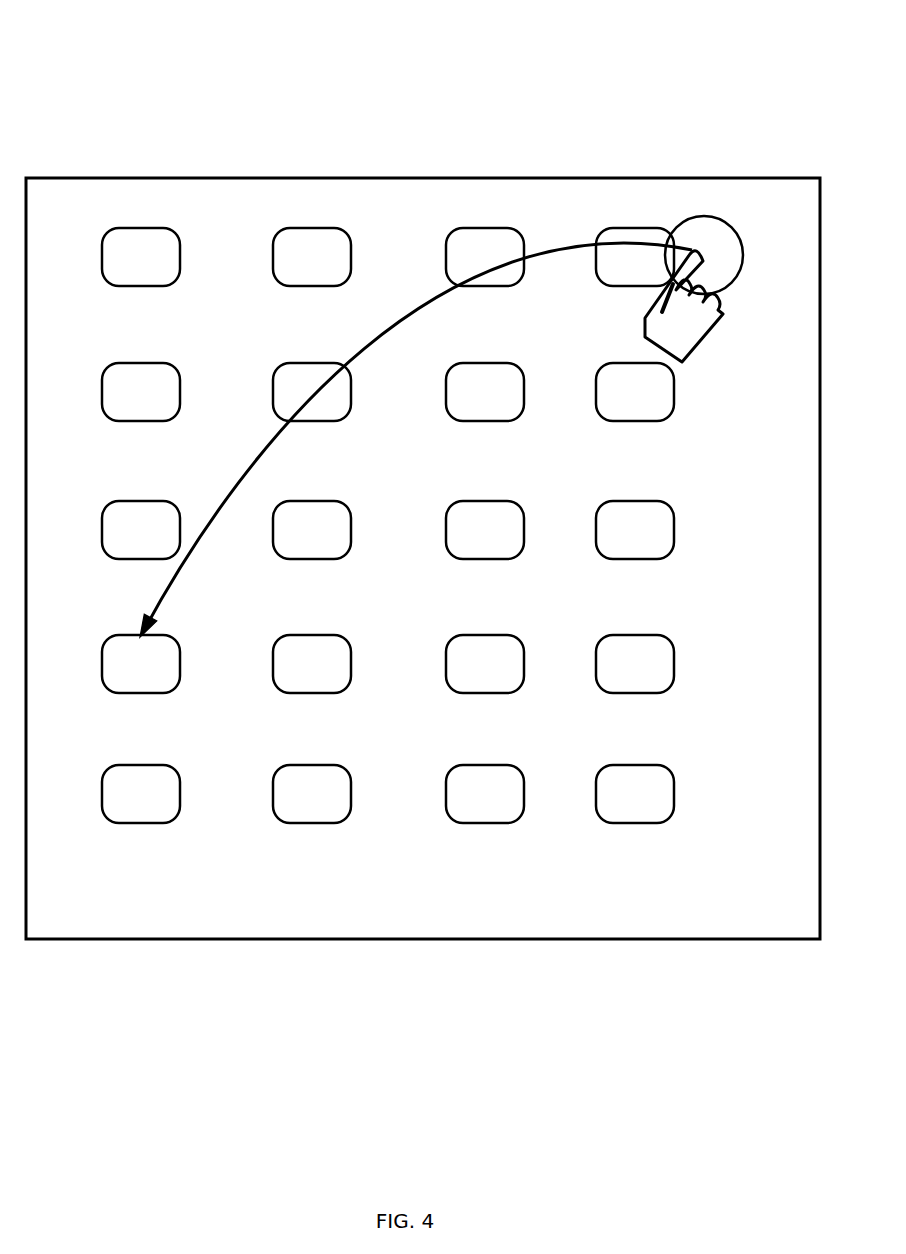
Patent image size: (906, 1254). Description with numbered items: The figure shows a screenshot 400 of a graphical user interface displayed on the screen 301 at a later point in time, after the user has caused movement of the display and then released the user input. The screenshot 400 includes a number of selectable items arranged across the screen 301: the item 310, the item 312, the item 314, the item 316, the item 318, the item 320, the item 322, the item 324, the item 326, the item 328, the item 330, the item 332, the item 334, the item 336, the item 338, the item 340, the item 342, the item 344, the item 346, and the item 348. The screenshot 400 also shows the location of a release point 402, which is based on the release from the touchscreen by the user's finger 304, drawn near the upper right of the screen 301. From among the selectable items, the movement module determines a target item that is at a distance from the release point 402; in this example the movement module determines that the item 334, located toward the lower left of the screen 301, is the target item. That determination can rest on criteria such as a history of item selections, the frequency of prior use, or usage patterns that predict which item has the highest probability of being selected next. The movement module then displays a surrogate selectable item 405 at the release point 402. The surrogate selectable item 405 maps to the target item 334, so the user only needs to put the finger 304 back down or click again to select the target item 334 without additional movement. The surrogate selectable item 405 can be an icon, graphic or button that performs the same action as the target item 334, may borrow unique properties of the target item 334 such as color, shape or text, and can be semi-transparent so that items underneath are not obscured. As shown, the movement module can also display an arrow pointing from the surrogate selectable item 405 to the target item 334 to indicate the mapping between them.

The screenshot 400 is at (101, 62).
The screen 301 is at (360, 940).
The user's finger 304 is at (640, 331).
The item 310 is at (143, 228).
The item 312 is at (313, 228).
The item 314 is at (484, 228).
The item 316 is at (634, 228).
The item 318 is at (143, 422).
The item 320 is at (317, 422).
The item 322 is at (484, 422).
The item 324 is at (596, 382).
The item 326 is at (122, 559).
The item 328 is at (348, 559).
The item 330 is at (448, 557).
The item 332 is at (596, 510).
The item 334 is at (180, 683).
The item 336 is at (336, 694).
The item 338 is at (501, 694).
The item 340 is at (596, 640).
The item 342 is at (158, 824).
The item 344 is at (328, 824).
The item 346 is at (494, 824).
The item 348 is at (596, 772).
The release point 402 is at (704, 252).
The surrogate selectable item 405 is at (735, 292).